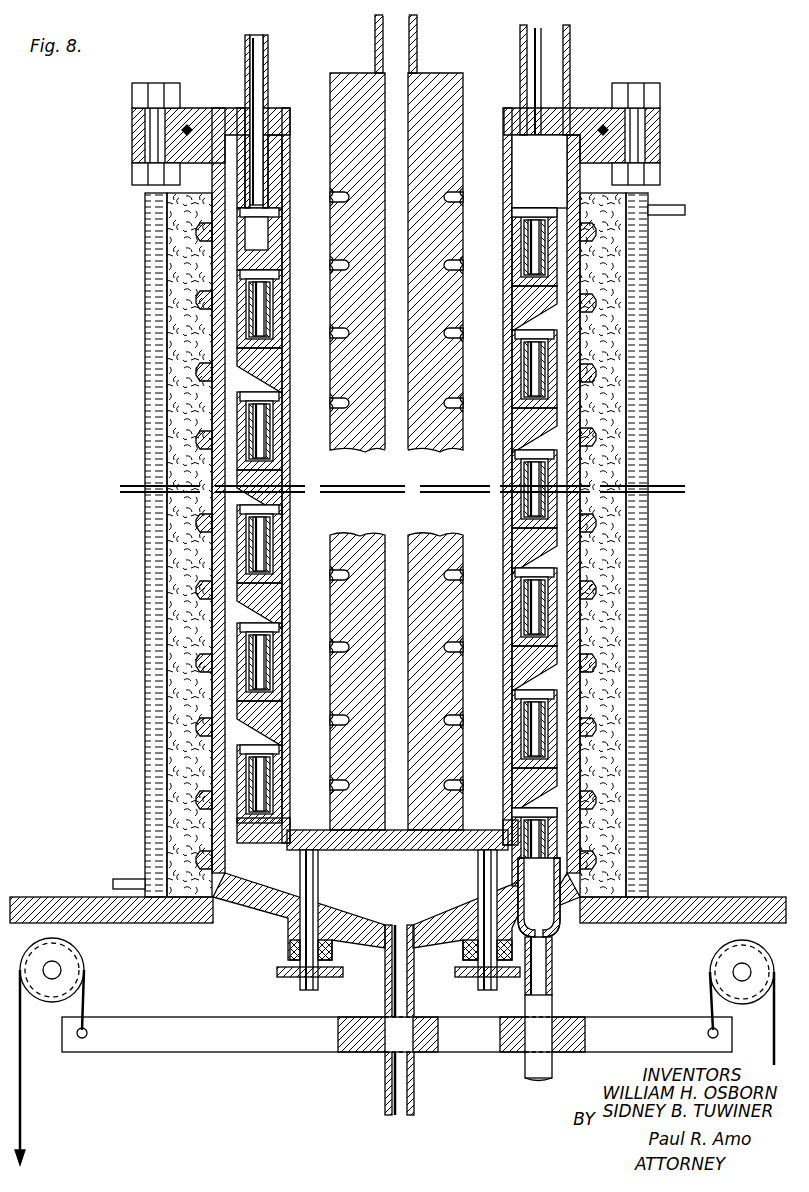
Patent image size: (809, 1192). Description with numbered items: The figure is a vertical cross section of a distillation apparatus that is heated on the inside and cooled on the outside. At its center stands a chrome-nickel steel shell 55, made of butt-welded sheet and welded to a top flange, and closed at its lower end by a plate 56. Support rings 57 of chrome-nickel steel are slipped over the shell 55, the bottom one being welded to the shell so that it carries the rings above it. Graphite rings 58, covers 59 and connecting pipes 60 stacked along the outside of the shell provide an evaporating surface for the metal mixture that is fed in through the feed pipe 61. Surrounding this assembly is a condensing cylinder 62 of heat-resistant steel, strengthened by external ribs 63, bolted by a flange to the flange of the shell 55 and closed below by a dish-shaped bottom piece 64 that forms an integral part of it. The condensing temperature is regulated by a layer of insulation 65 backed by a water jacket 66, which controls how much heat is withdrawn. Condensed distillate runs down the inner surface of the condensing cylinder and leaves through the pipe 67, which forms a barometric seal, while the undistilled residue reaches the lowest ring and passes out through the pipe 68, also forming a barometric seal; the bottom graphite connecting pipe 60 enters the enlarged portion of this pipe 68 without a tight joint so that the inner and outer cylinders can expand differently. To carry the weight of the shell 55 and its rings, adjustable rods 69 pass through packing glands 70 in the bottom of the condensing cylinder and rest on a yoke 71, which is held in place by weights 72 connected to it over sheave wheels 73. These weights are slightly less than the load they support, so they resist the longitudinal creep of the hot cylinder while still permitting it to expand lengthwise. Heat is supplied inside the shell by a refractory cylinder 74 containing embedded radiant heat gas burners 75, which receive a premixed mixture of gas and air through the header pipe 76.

The shell 55 is at (284, 430).
The plate 56 is at (420, 851).
The support rings 57 is at (525, 412).
The graphite rings 58 is at (520, 345).
The covers 59 is at (265, 372).
The connecting pipes 60 is at (255, 300).
The feed pipe 61 is at (248, 38).
The condensing cylinder 62 is at (210, 400).
The external ribs 63 is at (195, 372).
The dish-shaped bottom piece 64 is at (355, 920).
The layer of insulation 65 is at (610, 405).
The water jacket 66 is at (640, 340).
The pipe 67 is at (389, 1078).
The pipe 68 is at (540, 968).
The adjustable rods 69 is at (302, 872).
The packing glands 70 is at (290, 952).
The yoke 71 is at (247, 1040).
The weights 72 is at (25, 1158).
The sheave wheels 73 is at (68, 962).
The refractory cylinder 74 is at (440, 85).
The radiant heat gas burners 75 is at (455, 197).
The header pipe 76 is at (376, 30).